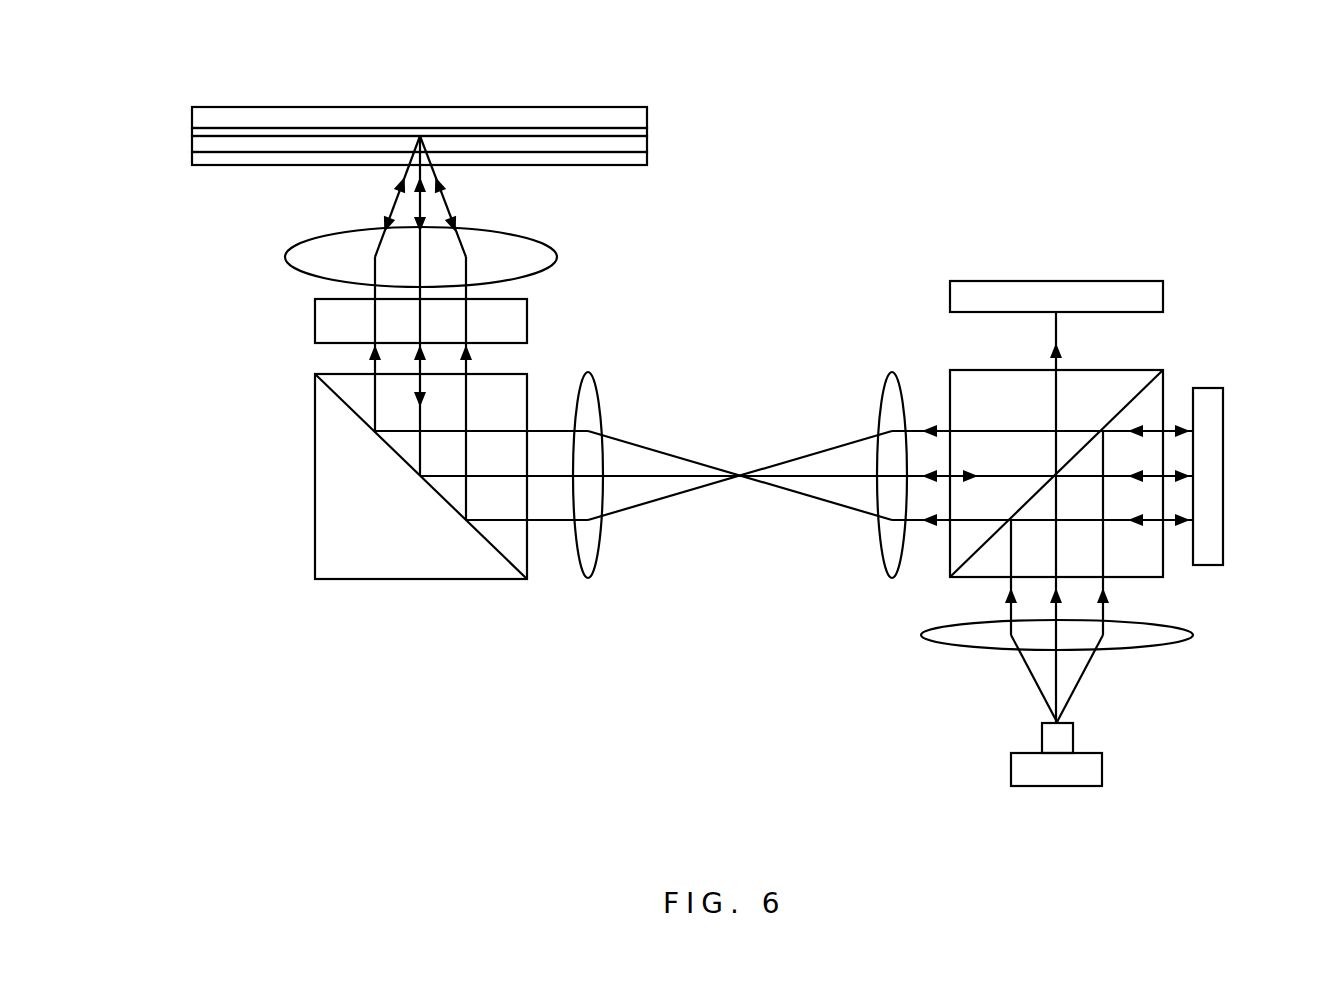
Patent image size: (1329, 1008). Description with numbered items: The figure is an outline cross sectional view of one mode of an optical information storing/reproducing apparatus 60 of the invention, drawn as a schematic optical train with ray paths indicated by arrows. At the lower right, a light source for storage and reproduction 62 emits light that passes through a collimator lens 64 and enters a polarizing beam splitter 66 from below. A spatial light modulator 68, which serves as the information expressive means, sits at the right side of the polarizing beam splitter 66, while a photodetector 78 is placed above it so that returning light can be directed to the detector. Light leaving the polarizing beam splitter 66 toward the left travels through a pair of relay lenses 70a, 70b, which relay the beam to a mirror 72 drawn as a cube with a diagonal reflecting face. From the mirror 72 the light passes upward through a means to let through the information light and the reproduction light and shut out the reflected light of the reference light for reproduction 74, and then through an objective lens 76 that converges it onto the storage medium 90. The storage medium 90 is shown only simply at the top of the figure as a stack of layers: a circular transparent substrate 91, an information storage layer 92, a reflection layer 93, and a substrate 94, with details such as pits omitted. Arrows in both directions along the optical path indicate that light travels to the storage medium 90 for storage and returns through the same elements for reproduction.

The optical information storing/reproducing apparatus 60 is at (1137, 228).
The light source for storage and reproduction 62 is at (1102, 768).
The collimator lens 64 is at (1193, 634).
The polarizing beam splitter 66 is at (1163, 372).
The spatial light modulator 68 is at (1223, 408).
The relay lens 70a is at (882, 378).
The relay lens 70b is at (593, 380).
The mirror 72 is at (315, 408).
The means to let through the information light and the reproduction light and shut o 74 is at (315, 328).
The objective lens 76 is at (283, 257).
The photodetector 78 is at (1163, 290).
The storage medium 90 is at (612, 80).
The circular transparent substrate 91 is at (647, 160).
The information storage layer 92 is at (647, 138).
The reflection layer 93 is at (647, 128).
The substrate 94 is at (647, 107).